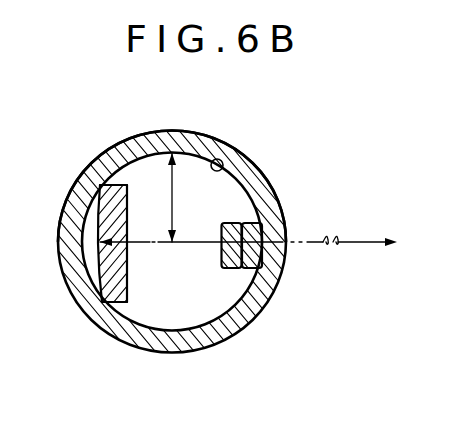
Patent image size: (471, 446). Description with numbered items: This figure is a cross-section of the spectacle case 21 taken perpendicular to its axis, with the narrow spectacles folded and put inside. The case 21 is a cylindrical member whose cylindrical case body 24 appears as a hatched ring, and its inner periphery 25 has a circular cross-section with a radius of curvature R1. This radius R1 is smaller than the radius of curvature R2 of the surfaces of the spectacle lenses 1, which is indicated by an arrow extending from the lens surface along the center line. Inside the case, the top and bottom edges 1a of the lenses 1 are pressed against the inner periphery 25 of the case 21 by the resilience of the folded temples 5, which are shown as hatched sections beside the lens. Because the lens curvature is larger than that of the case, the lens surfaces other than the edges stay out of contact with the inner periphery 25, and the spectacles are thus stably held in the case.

The spectacle lens 1 is at (112, 270).
The top and bottom edges of the lenses 1a is at (100, 186).
The temple 5 is at (230, 268).
The spectacle case 21 is at (166, 360).
The cylindrical case body 24 is at (270, 189).
The inner periphery 25 is at (221, 161).
The radius of curvature of the inner periphery R1 is at (185, 197).
The radius of curvature of the lens surfaces R2 is at (248, 225).